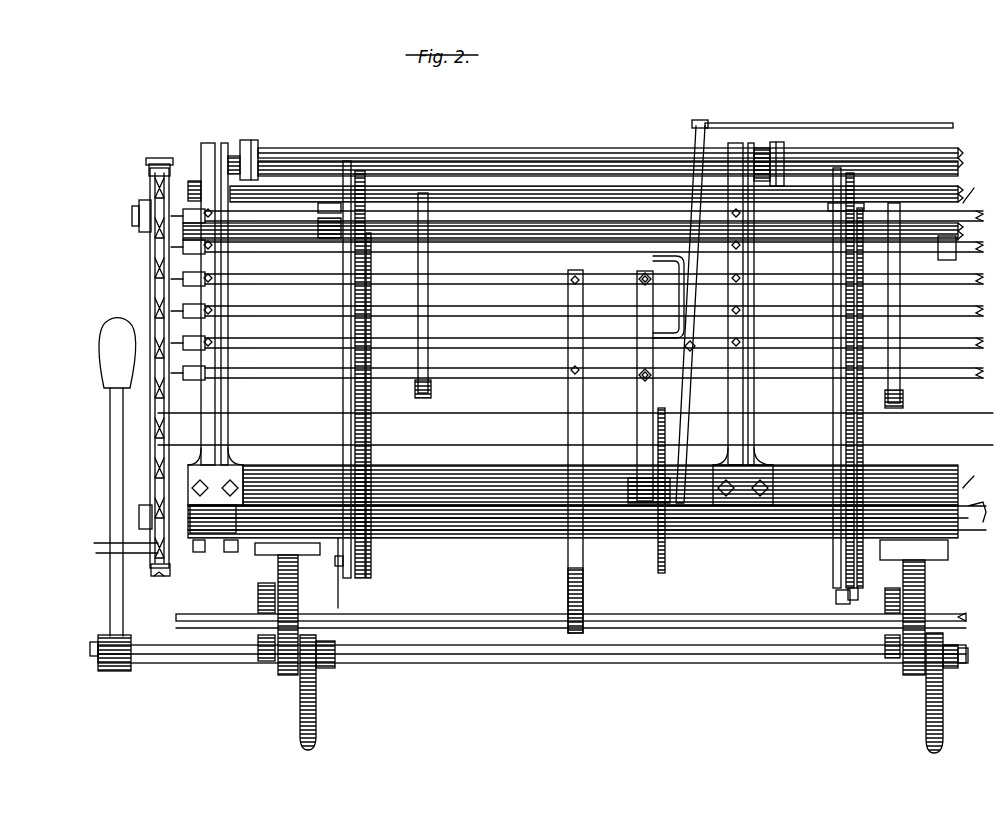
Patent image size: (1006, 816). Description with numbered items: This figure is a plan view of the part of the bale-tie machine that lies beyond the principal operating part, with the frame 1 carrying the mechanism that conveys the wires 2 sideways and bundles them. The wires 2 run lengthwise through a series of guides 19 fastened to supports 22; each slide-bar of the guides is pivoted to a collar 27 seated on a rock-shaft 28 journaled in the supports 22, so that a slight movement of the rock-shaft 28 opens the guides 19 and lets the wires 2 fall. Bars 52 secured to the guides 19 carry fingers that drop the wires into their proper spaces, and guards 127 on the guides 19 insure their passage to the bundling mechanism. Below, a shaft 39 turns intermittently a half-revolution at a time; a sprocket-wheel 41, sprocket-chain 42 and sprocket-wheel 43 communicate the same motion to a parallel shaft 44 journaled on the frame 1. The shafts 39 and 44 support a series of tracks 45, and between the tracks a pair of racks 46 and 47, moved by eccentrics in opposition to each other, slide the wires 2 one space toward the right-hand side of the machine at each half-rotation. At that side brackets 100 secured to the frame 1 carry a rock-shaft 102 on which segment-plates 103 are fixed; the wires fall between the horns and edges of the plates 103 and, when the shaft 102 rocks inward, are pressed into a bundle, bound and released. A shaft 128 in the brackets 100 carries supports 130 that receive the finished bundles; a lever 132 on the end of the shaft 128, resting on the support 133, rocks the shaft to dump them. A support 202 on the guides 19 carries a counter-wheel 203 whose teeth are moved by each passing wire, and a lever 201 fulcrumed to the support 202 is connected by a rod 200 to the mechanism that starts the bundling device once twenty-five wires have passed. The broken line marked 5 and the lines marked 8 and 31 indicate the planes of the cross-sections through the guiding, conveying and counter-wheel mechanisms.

The frame 1 is at (974, 341).
The wires 2 is at (980, 410).
The section line 5 5 is at (300, 760).
The section line 8 8 is at (396, 550).
The guides 19 is at (962, 208).
The supports 22 is at (202, 135).
The collar 27 is at (240, 132).
The rock-shaft 28 is at (560, 148).
The section line 31 31 is at (702, 580).
The shaft 39 is at (130, 204).
The sprocket-wheel 41 is at (150, 160).
The sprocket-chain 42 is at (145, 286).
The sprocket-wheel 43 is at (156, 568).
The shaft 44 is at (132, 505).
The tracks 45 is at (340, 552).
The rack 46 is at (845, 600).
The rack 47 is at (342, 153).
The bars 52 is at (418, 316).
The brackets 100 is at (286, 582).
The rock-shaft 102 is at (970, 604).
The segment-plates 103 is at (232, 656).
The guards 127 is at (572, 568).
The shaft 128 is at (665, 660).
The supports 130 is at (300, 700).
The lever 132 is at (120, 535).
The support 133 is at (100, 547).
The rod 200 is at (904, 118).
The lever 201 is at (688, 128).
The support 202 is at (628, 386).
The counter-wheel 203 is at (650, 546).